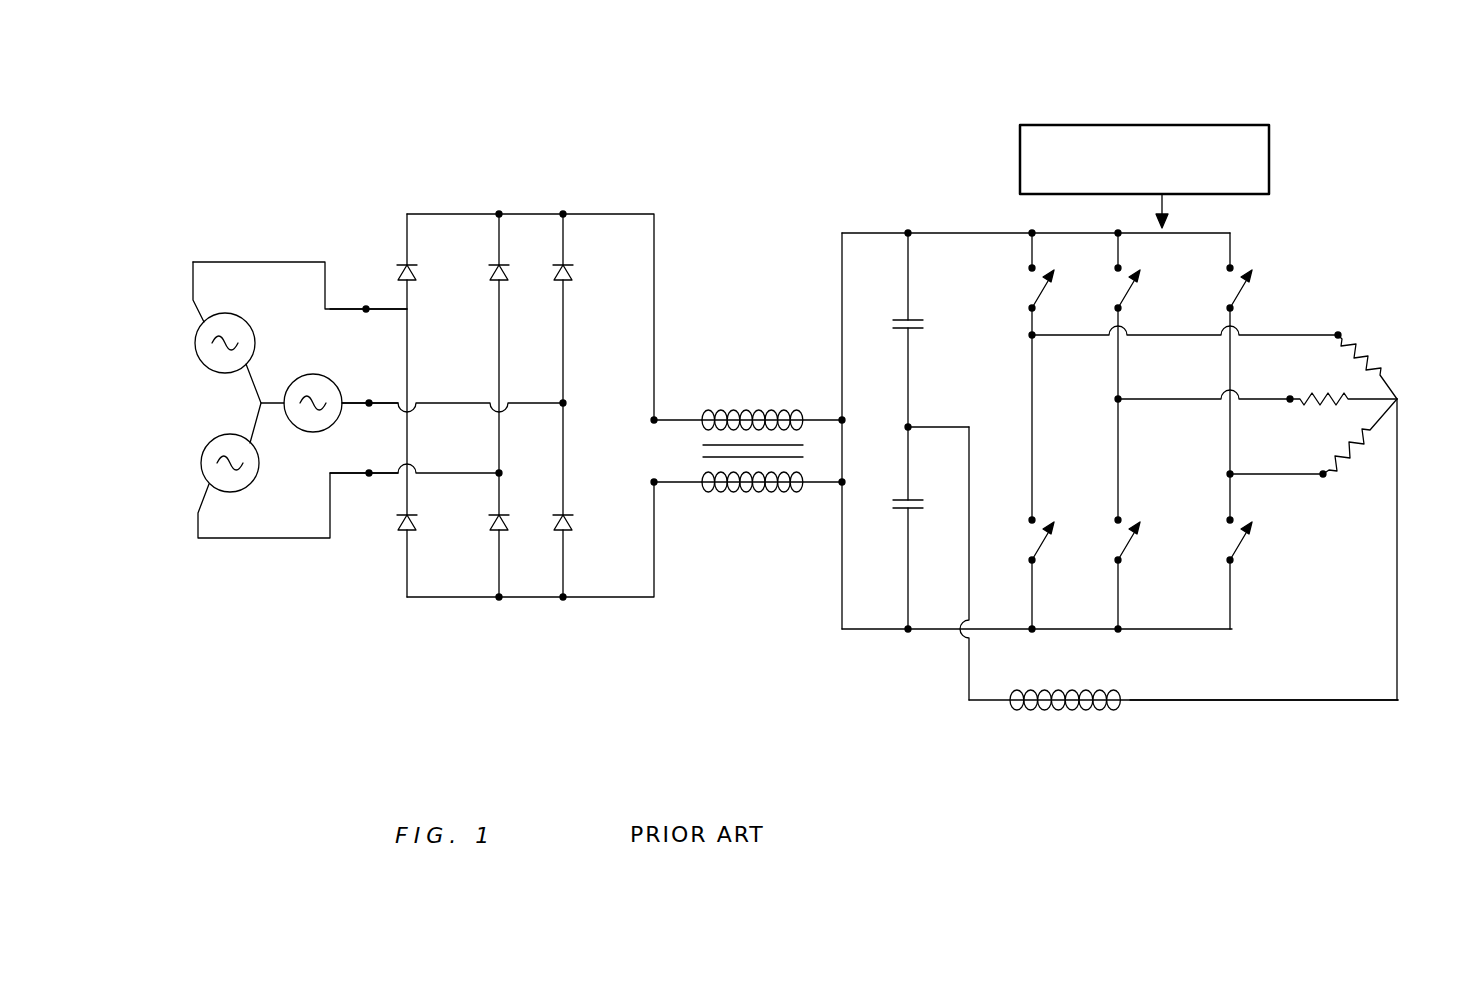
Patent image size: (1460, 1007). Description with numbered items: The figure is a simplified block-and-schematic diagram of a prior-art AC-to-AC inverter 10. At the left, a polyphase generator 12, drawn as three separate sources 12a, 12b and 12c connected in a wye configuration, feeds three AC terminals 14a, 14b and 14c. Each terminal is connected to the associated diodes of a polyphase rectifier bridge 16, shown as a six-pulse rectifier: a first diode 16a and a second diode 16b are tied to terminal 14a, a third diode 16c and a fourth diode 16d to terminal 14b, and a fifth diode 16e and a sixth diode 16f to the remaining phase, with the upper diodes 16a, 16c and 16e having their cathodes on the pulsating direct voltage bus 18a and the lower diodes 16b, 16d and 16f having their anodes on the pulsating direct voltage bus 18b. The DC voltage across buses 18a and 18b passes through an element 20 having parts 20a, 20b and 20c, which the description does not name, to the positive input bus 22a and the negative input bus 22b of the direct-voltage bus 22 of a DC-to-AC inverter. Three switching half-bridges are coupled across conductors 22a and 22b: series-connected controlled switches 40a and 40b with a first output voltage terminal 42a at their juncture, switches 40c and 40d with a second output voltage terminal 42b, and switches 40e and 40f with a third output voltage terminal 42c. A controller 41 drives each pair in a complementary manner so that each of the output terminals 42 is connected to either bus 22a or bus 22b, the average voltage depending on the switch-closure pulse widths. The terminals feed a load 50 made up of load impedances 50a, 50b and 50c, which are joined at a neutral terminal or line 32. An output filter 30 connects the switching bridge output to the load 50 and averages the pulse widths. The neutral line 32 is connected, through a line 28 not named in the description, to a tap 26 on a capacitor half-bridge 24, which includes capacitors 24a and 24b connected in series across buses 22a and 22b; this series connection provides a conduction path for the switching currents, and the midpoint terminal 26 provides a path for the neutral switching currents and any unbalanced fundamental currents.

The AC-to-AC inverter 10 is at (577, 734).
The polyphase generator 12 is at (285, 400).
The source 12a is at (246, 325).
The source 12b is at (246, 488).
The source 12c is at (333, 430).
The AC terminal 14a is at (366, 306).
The AC terminal 14b is at (369, 400).
The AC terminal 14c is at (369, 476).
The polyphase rectifier bridge 16 is at (501, 358).
The first diode 16a is at (416, 273).
The second diode 16b is at (401, 525).
The third diode 16c is at (510, 275).
The fourth diode 16d is at (493, 525).
The fifth diode 16e is at (575, 275).
The diode 16f is at (570, 524).
The pulsating direct voltage bus 18a is at (652, 420).
The pulsating direct voltage bus 18b is at (652, 482).
The DC filter inductor 20 is at (791, 451).
The inductor winding 20a is at (766, 410).
The inductor winding 20b is at (755, 493).
The inductor core 20c is at (804, 450).
The inverter 22 is at (1083, 438).
The positive input bus 22a is at (907, 231).
The negative input bus 22b is at (907, 631).
The capacitor half-bridge 24 is at (912, 431).
The capacitor 24a is at (913, 317).
The capacitor 24b is at (900, 510).
The tap 26 is at (909, 426).
The neutral connection line 28 is at (968, 545).
The output filter 30 is at (1057, 712).
The neutral line 32 is at (1358, 698).
The controlled switch 40a is at (1054, 281).
The controlled switch 40b is at (1054, 533).
The controlled switch 40c is at (1140, 281).
The controlled switch 40d is at (1140, 533).
The controlled switch 40e is at (1253, 292).
The controlled switch 40f is at (1252, 533).
The controller 41 is at (1271, 141).
The output terminals 42 is at (1145, 396).
The first output voltage terminal 42a is at (1030, 335).
The second output voltage terminal 42b is at (1120, 398).
The third output voltage terminal 42c is at (1229, 474).
The load 50 is at (1349, 485).
The load 50a is at (1376, 350).
The load 50b is at (1318, 392).
The load 50c is at (1340, 438).